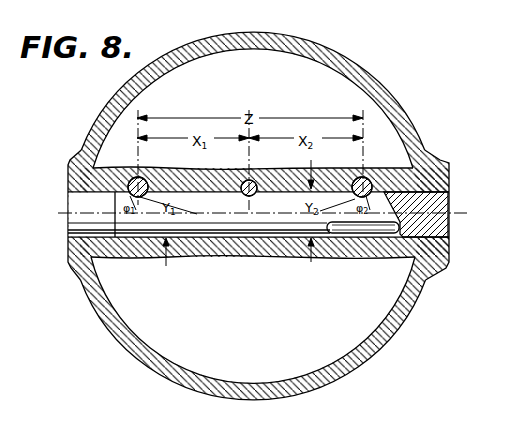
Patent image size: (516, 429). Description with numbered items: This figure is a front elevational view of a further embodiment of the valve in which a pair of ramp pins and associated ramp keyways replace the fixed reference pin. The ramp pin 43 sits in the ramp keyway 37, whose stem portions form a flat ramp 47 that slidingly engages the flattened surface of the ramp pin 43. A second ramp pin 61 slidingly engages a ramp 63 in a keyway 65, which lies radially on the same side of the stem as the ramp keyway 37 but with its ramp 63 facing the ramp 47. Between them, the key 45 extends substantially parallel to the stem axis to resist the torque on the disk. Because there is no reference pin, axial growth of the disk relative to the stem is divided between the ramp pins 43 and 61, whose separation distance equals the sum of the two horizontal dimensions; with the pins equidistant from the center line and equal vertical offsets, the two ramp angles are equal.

The ramp keyway 37 is at (357, 177).
The ramp pin 43 is at (367, 175).
The key 45 is at (357, 234).
The ramp 47 is at (392, 166).
The second ramp pin 61 is at (125, 193).
The ramp 63 is at (128, 173).
The keyway 65 is at (166, 185).